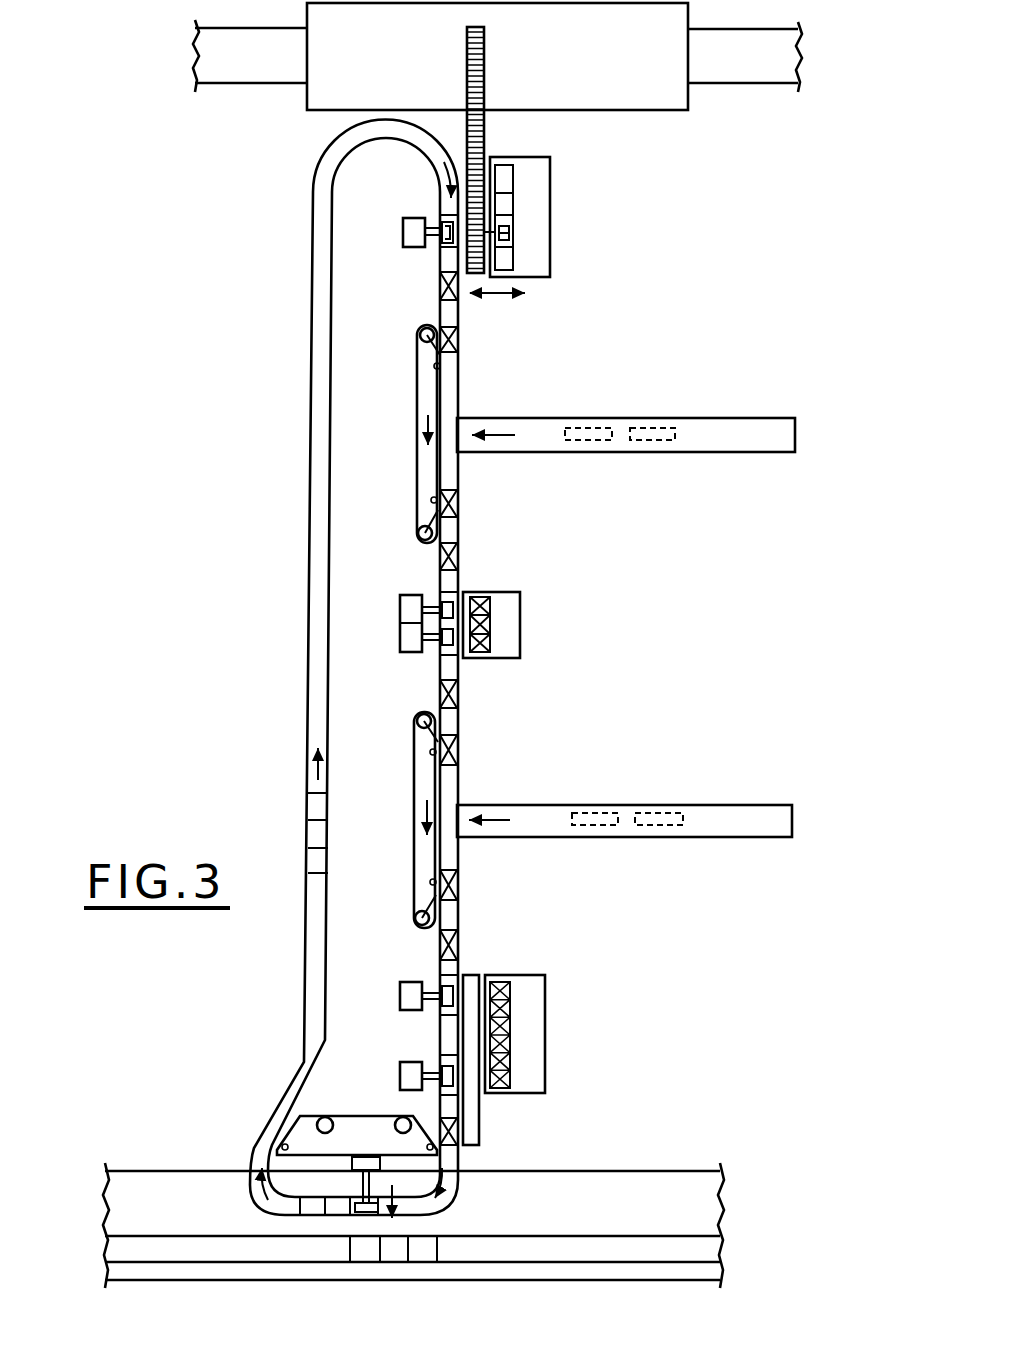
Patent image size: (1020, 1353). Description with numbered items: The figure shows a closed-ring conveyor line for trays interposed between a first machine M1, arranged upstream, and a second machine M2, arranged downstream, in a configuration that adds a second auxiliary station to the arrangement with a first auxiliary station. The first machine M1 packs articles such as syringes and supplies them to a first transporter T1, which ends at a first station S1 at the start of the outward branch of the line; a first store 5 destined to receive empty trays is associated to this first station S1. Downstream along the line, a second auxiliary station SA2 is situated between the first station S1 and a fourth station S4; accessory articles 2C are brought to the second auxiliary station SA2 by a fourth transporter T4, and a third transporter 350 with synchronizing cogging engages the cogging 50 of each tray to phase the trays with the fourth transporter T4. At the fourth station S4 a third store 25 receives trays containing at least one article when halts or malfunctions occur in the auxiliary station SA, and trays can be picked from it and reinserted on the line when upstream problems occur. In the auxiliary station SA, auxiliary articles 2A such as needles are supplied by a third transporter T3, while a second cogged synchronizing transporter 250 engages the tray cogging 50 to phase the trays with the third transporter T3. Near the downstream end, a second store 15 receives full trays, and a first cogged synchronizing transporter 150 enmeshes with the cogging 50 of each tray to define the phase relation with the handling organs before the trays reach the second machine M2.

The first machine M1 is at (665, 100).
The first transporter T1 is at (485, 130).
The first store 5 is at (566, 218).
The first station S1 is at (418, 258).
The second auxiliary station SA2 is at (470, 402).
The accessory articles 2C is at (598, 428).
The fourth transporter T4 is at (767, 425).
The third transporter 350 is at (417, 470).
The third store 25 is at (533, 622).
The fourth station S4 is at (430, 656).
The auxiliary station SA is at (470, 792).
The auxiliary articles 2A is at (605, 815).
The third transporter T3 is at (762, 810).
The second cogged synchronizing transporter 250 is at (412, 852).
The cogging 50 is at (476, 970).
The second store 15 is at (549, 1008).
The first cogged synchronizing transporter 150 is at (360, 1116).
The second machine M2 is at (670, 1178).